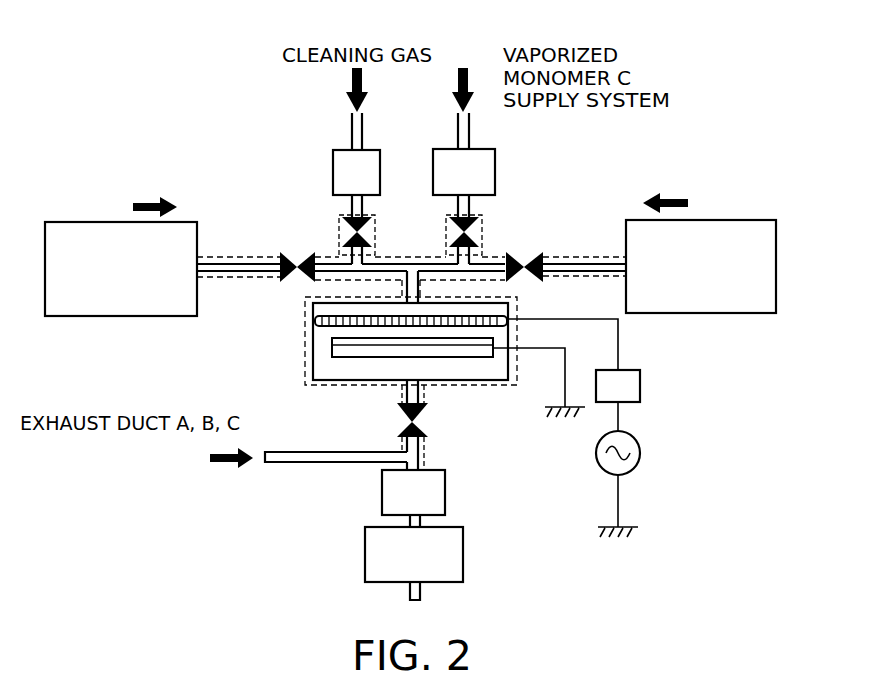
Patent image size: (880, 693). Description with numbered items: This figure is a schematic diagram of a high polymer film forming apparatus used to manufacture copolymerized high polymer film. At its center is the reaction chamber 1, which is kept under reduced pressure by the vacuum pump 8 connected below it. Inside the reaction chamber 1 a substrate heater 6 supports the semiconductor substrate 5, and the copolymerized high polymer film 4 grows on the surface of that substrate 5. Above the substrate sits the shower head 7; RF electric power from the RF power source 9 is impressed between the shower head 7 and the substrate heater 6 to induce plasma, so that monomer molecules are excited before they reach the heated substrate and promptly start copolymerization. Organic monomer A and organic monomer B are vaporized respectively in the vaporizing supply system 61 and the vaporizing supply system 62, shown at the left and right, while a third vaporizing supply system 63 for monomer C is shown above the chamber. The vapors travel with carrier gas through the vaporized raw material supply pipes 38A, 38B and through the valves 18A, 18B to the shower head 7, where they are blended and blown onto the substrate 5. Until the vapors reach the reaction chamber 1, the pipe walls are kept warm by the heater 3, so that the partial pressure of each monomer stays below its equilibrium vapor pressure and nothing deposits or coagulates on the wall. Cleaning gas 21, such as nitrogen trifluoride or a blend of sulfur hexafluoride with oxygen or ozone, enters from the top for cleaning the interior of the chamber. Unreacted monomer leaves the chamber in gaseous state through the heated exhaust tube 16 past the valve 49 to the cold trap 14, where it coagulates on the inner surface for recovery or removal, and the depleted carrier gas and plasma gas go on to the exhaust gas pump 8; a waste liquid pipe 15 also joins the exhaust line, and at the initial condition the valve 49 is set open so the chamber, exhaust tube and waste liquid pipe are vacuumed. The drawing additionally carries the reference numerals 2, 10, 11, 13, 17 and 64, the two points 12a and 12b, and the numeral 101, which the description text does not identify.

The reaction chamber 1 is at (336, 381).
The heating jacket 2 is at (378, 386).
The heater 3 is at (233, 278).
The copolymerized high polymer film 4 is at (332, 339).
The semiconductor substrate 5 is at (332, 350).
The substrate heater 6 is at (330, 376).
The shower head 7 is at (317, 321).
The vacuum pump 8 is at (463, 541).
The RF power source 9 is at (640, 446).
The matching unit 10 is at (640, 383).
The power feed line 11 is at (618, 338).
The ground 12a is at (560, 370).
The ground 12b is at (635, 521).
The mass flow controller 13 is at (380, 160).
The cold trap 14 is at (445, 492).
The waste liquid pipe 15 is at (300, 466).
The exhaust tube 16 is at (421, 388).
The cleaning gas valve 17 is at (370, 237).
The valve 18A is at (297, 252).
The valve 18B is at (530, 252).
The cleaning gas 21 is at (371, 90).
The vaporized raw material supply pipe 38A is at (265, 257).
The vaporized raw material supply pipe 38B is at (572, 257).
The valve 49 is at (424, 431).
The vaporizing supply system 61 is at (68, 222).
The vaporizing supply system 62 is at (747, 220).
The vaporizing supply system 63 is at (495, 160).
The monomer C valve 64 is at (479, 237).
The film forming apparatus 101 is at (700, 113).